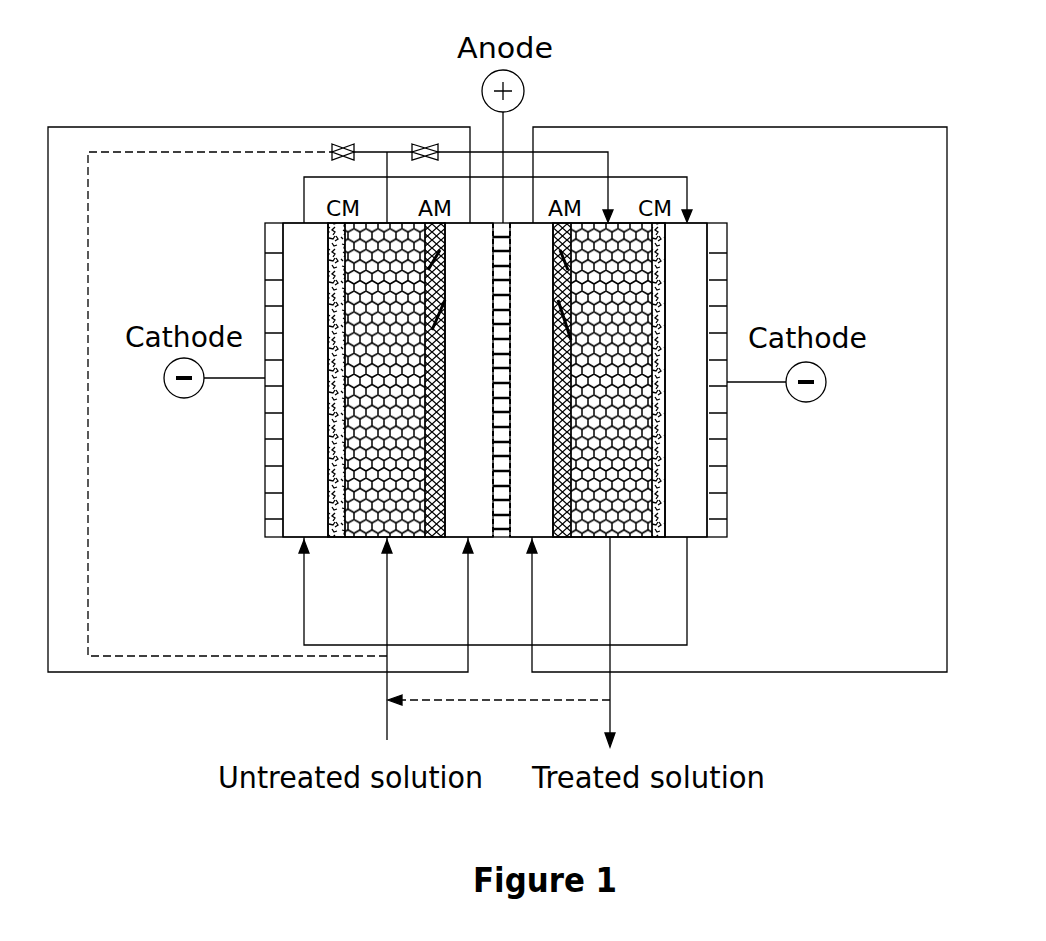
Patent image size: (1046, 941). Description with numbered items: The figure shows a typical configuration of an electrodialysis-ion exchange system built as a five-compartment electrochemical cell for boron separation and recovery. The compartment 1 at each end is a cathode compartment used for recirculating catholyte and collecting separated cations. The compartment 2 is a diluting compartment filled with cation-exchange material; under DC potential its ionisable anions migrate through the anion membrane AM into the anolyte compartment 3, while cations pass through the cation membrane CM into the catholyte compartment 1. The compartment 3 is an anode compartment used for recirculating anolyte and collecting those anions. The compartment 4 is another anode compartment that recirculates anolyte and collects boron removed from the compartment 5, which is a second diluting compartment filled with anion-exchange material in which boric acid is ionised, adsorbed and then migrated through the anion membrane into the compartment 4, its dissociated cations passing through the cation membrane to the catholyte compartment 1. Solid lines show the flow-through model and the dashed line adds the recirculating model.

The cathode compartment 1 is at (495, 380).
The diluting compartment 2 is at (386, 380).
The anode compartment 3 is at (469, 380).
The anode compartment 4 is at (531, 380).
The diluting compartment 5 is at (609, 380).